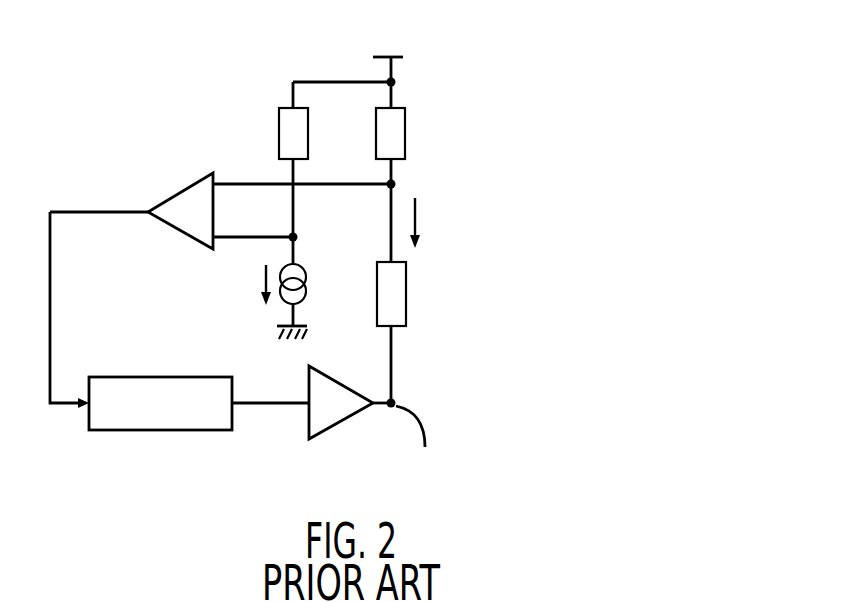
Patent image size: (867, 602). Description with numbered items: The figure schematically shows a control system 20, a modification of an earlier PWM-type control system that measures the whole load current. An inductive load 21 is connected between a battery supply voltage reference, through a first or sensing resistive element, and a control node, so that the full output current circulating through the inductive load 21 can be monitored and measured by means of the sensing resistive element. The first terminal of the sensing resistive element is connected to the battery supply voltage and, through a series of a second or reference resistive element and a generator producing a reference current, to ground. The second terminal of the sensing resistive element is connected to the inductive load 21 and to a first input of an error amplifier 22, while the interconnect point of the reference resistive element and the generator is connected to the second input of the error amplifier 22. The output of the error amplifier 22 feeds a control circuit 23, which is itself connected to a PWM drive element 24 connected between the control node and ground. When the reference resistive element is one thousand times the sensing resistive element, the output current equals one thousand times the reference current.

The control system 20 is at (119, 102).
The inductive load 21 is at (397, 297).
The error amplifier 22 is at (188, 200).
The control circuit 23 is at (165, 417).
The PWM drive element 24 is at (345, 414).